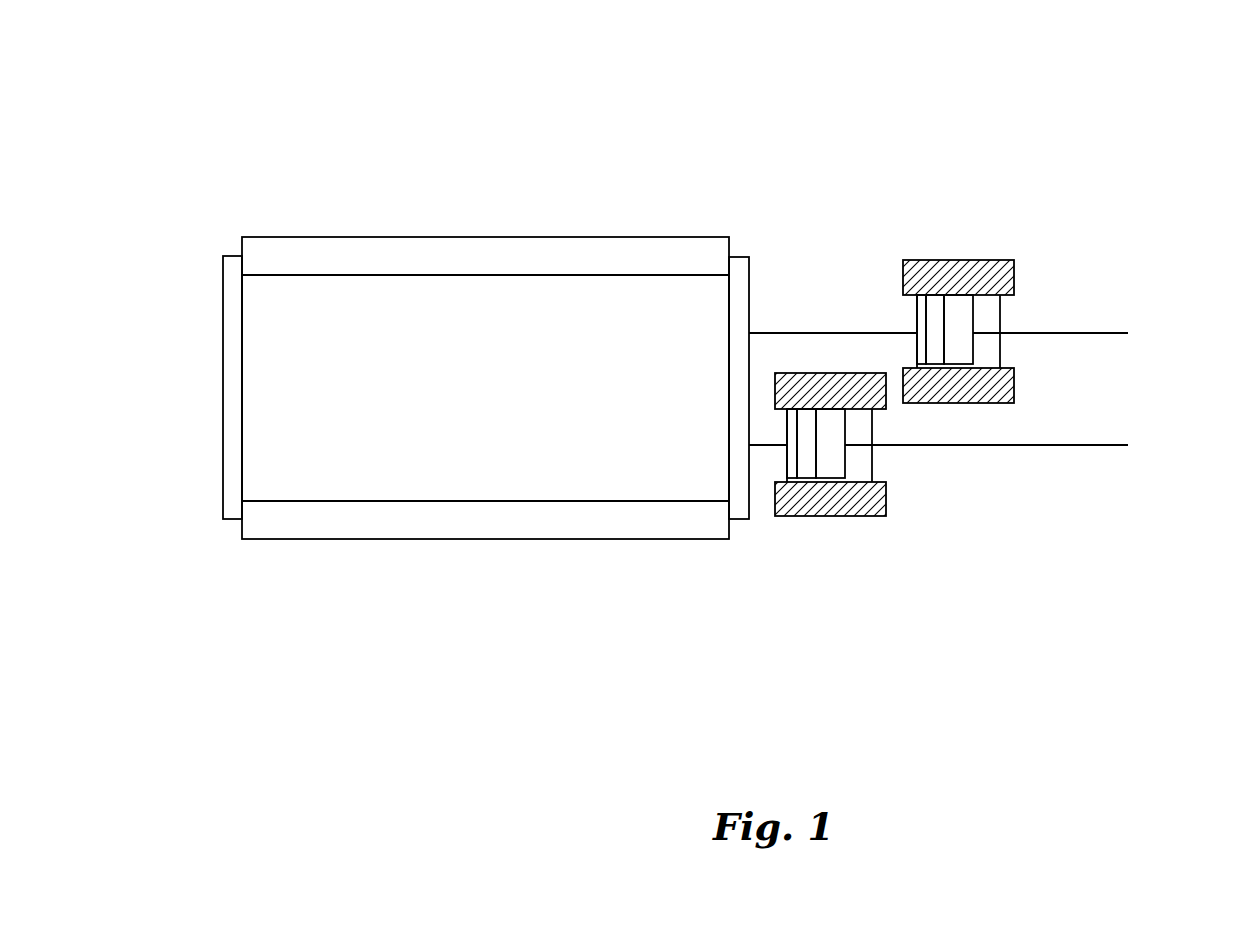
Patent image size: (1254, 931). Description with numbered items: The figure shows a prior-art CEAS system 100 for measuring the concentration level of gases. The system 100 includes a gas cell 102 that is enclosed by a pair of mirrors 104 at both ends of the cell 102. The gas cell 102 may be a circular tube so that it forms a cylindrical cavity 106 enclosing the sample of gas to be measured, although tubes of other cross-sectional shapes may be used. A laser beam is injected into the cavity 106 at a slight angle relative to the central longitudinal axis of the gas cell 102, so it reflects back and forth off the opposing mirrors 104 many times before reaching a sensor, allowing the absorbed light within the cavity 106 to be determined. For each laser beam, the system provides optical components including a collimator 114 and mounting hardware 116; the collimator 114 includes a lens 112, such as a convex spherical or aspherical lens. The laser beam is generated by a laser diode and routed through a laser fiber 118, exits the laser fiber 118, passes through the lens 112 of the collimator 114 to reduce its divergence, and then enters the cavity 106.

The CEAS system 100 is at (1046, 66).
The gas cell 102 is at (357, 237).
The mirrors 104 is at (222, 520).
The cylindrical cavity 106 is at (358, 453).
The lens 112 is at (948, 357).
The collimator 114 is at (1000, 318).
The mounting hardware 116 is at (1005, 258).
The laser fiber 118 is at (1128, 333).